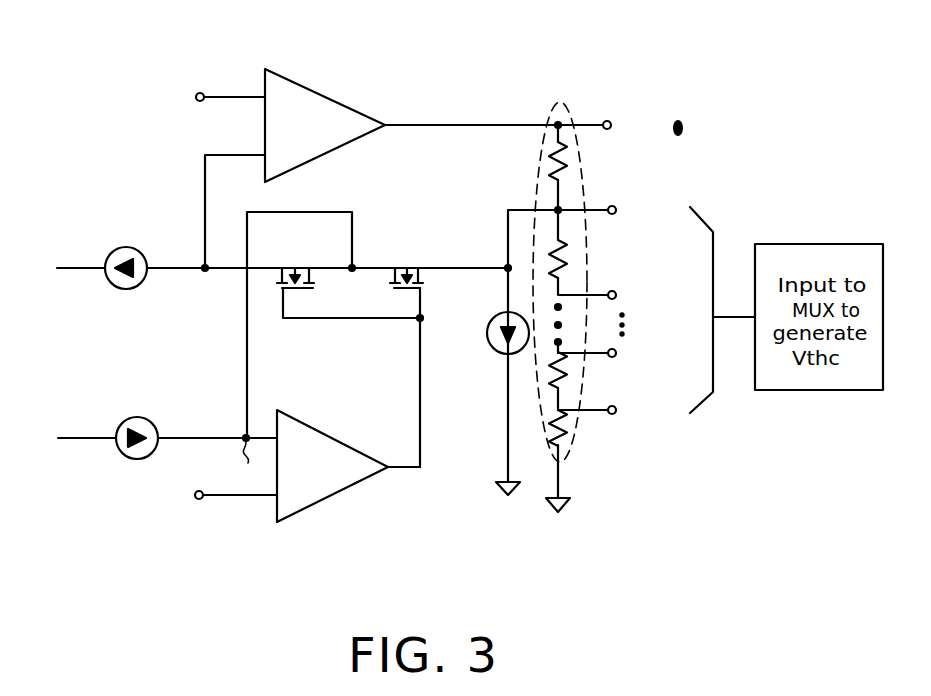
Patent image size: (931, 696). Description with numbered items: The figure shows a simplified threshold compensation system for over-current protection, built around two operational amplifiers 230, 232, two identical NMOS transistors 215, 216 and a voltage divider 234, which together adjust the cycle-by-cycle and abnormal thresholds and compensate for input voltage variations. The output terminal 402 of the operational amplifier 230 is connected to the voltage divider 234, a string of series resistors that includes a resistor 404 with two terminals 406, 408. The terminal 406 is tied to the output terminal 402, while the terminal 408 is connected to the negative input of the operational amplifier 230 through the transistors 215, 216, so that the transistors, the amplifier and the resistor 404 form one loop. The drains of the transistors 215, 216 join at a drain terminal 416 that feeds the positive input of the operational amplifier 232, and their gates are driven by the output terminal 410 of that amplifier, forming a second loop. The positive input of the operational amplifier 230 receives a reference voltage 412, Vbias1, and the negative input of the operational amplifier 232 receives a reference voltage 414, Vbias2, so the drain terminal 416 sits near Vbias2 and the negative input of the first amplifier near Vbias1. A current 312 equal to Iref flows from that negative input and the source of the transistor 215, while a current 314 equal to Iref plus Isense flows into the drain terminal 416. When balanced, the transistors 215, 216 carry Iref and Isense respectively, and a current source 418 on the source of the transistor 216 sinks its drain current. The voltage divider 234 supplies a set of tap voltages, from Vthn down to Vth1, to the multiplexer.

The operational amplifier 230 is at (325, 97).
The operational amplifier 232 is at (325, 434).
The voltage divider 234 is at (612, 307).
The transistor 215 is at (298, 289).
The transistor 216 is at (421, 284).
The current 312 is at (70, 267).
The current 314 is at (77, 440).
The output terminal 402 is at (387, 122).
The resistor 404 is at (570, 154).
The terminal 406 is at (567, 111).
The terminal 408 is at (564, 208).
The output terminal 410 is at (390, 469).
The reference voltage 412 is at (200, 92).
The reference voltage 414 is at (199, 500).
The drain terminal 416 is at (353, 271).
The current source 418 is at (497, 350).